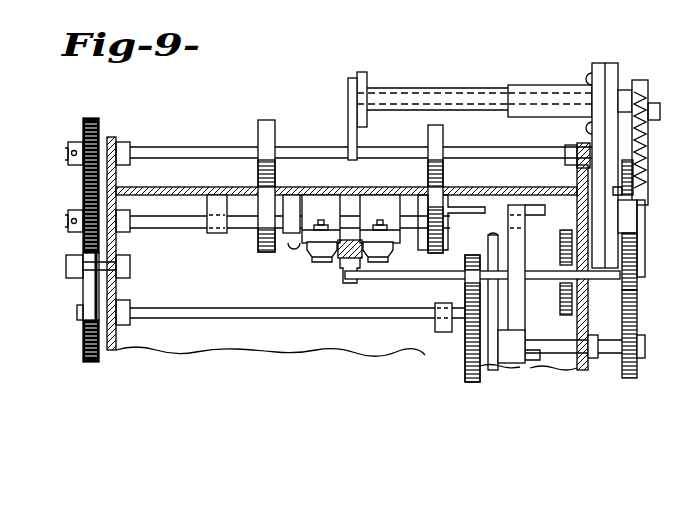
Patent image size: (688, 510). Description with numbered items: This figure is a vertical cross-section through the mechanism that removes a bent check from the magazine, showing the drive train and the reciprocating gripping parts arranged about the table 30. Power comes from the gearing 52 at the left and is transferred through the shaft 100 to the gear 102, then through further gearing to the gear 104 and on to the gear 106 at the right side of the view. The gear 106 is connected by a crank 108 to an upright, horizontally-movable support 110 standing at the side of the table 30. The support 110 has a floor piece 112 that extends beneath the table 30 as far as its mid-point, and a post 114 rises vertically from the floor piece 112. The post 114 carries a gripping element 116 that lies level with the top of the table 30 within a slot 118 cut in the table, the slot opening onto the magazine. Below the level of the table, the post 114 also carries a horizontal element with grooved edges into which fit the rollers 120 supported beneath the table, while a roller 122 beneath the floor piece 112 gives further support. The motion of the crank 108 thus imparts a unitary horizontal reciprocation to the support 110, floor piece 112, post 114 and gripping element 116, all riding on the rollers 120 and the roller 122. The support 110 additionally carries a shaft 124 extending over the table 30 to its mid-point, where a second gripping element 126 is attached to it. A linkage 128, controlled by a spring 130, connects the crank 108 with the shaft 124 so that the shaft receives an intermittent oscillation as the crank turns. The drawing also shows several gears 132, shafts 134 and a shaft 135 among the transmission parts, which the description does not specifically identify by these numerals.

The table 30 is at (200, 189).
The gearing 52 is at (82, 245).
The shaft 100 is at (207, 310).
The gear 102 is at (465, 367).
The gear 104 is at (638, 366).
The gear 106 is at (636, 278).
The crank 108 is at (641, 250).
The support 110 is at (611, 72).
The floor piece 112 is at (408, 276).
The post 114 is at (356, 219).
The gripping element 116 is at (358, 190).
The slot 118 is at (342, 180).
The rollers 120 is at (312, 258).
The roller 122 is at (566, 248).
The shaft 124 is at (553, 94).
The gripping element 126 is at (348, 88).
The linkage 128 is at (645, 168).
The spring 130 is at (648, 128).
The gear 132 is at (265, 118).
The shaft 134 is at (190, 152).
The shaft 135 is at (560, 340).